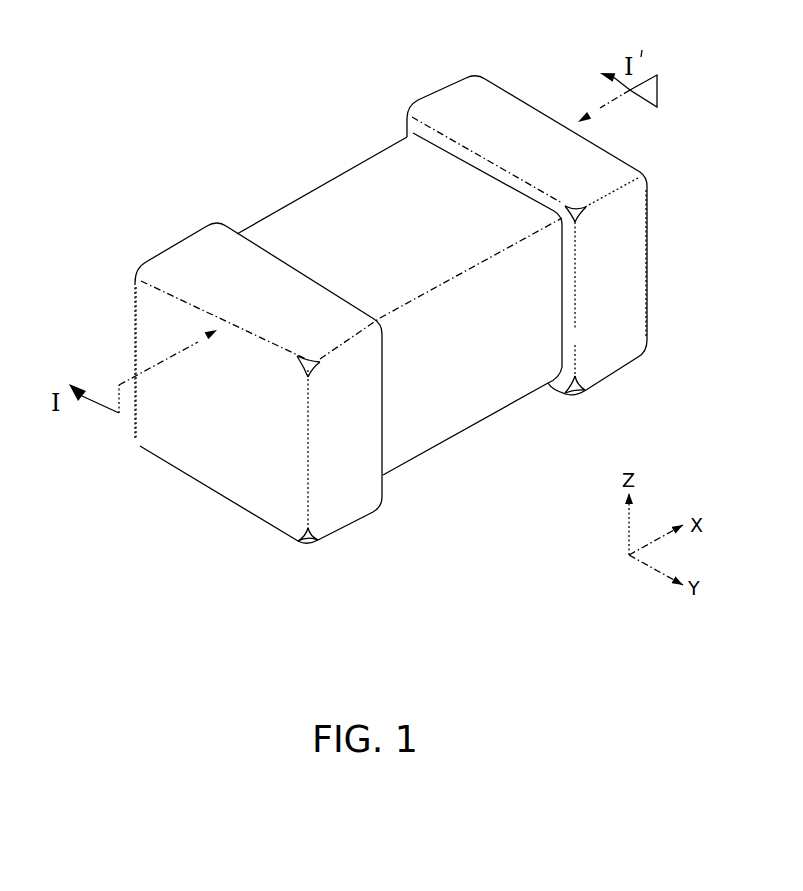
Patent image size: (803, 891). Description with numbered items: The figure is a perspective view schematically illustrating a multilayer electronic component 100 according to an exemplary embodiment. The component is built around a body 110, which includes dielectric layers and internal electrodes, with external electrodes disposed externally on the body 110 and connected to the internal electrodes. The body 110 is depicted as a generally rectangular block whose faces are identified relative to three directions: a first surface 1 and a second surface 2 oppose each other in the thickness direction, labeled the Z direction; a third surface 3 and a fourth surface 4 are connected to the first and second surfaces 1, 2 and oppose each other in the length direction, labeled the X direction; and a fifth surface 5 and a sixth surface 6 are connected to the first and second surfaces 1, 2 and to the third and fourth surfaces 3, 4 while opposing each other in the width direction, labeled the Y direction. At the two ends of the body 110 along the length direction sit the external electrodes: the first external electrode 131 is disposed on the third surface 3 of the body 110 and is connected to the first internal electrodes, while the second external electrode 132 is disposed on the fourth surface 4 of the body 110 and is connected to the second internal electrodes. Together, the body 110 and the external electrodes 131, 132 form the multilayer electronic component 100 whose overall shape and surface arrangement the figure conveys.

The multilayer electronic component 100 is at (177, 45).
The body 110 is at (377, 287).
The first external electrode 131 is at (258, 358).
The second external electrode 132 is at (557, 212).
The first surface 1 is at (432, 398).
The second surface 2 is at (410, 192).
The third surface 3 is at (228, 443).
The fourth surface 4 is at (597, 251).
The fifth surface 5 is at (489, 367).
The sixth surface 6 is at (352, 212).